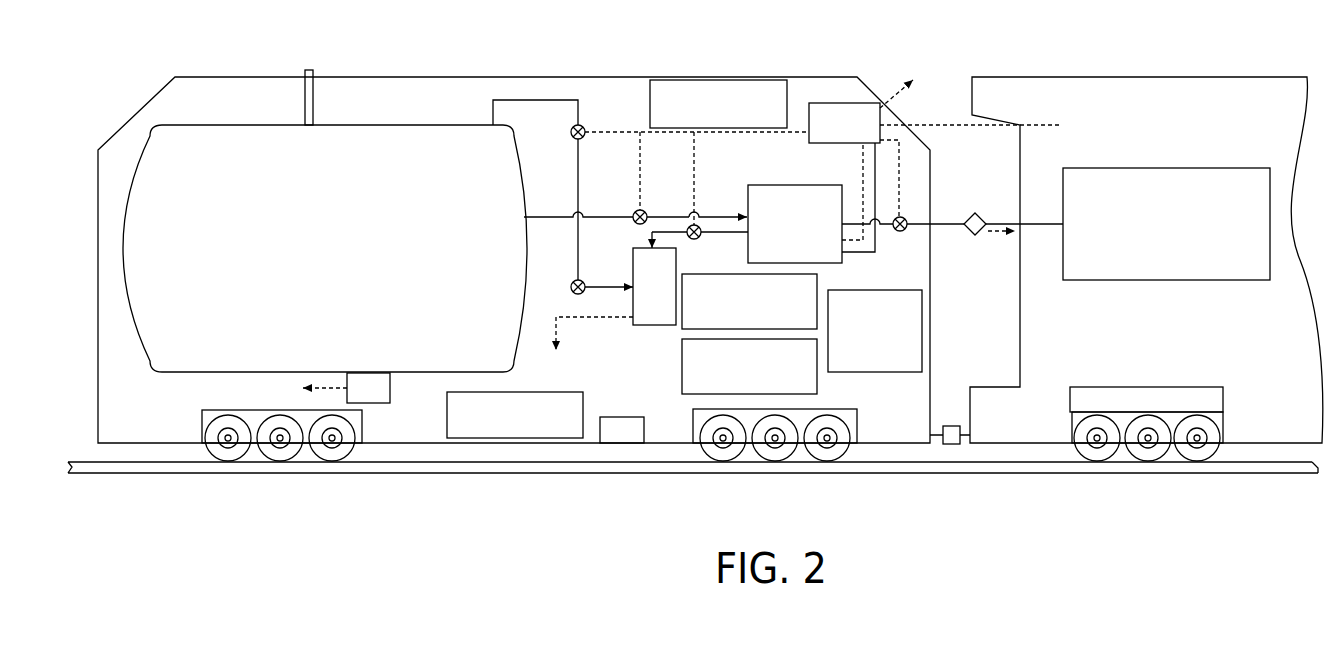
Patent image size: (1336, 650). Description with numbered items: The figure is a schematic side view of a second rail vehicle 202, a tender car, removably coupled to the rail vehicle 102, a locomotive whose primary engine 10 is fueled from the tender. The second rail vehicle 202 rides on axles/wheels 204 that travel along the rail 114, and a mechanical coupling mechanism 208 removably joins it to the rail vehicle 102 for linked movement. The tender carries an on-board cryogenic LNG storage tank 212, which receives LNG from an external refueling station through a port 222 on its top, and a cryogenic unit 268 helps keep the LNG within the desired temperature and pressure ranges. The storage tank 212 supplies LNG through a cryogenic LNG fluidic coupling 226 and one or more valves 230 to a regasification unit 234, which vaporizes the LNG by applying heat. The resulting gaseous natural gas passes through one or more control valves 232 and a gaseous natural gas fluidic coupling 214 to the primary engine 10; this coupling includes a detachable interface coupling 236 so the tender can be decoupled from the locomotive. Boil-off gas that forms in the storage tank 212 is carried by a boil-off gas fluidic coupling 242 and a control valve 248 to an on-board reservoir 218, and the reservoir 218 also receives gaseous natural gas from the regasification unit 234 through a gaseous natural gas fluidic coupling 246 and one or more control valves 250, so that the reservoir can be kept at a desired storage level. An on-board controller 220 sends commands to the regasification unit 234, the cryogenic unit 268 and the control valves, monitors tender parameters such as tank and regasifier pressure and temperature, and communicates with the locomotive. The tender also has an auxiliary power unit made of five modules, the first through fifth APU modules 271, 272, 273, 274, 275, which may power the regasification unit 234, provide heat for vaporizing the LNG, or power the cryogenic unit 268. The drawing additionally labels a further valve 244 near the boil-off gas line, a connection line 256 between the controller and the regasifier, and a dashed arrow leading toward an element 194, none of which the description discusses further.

The rail vehicle 102 is at (1093, 77).
The primary engine 10 is at (1175, 248).
The rail 114 is at (978, 467).
The second rail vehicle 202 is at (218, 77).
The axles/wheels 204 is at (818, 458).
The mechanical coupling mechanism 208 is at (951, 446).
The LNG storage tank 212 is at (339, 255).
The gaseous natural gas fluidic coupling 214 is at (1000, 222).
The reservoir 218 is at (669, 301).
The controller 220 is at (859, 138).
The port 222 is at (335, 108).
The cryogenic LNG fluidic coupling 226 is at (568, 216).
The valve 230 is at (636, 210).
The control valve 232 is at (906, 231).
The regasification unit 234 is at (809, 240).
The detachable interface coupling 236 is at (975, 237).
The boil-off gas fluidic coupling 242 is at (493, 100).
The valve 244 is at (573, 139).
The gaseous natural gas fluidic coupling 246 is at (708, 214).
The control valve 248 is at (573, 280).
The control valve 250 is at (690, 225).
The connection line 256 is at (875, 178).
The cryogenic unit 268 is at (382, 399).
The first APU module 271 is at (764, 325).
The second APU module 272 is at (764, 390).
The third APU module 273 is at (529, 438).
The fourth APU module 274 is at (732, 128).
The fifth APU module 275 is at (889, 368).
The external system (see FIG. 1) 194 is at (924, 85).